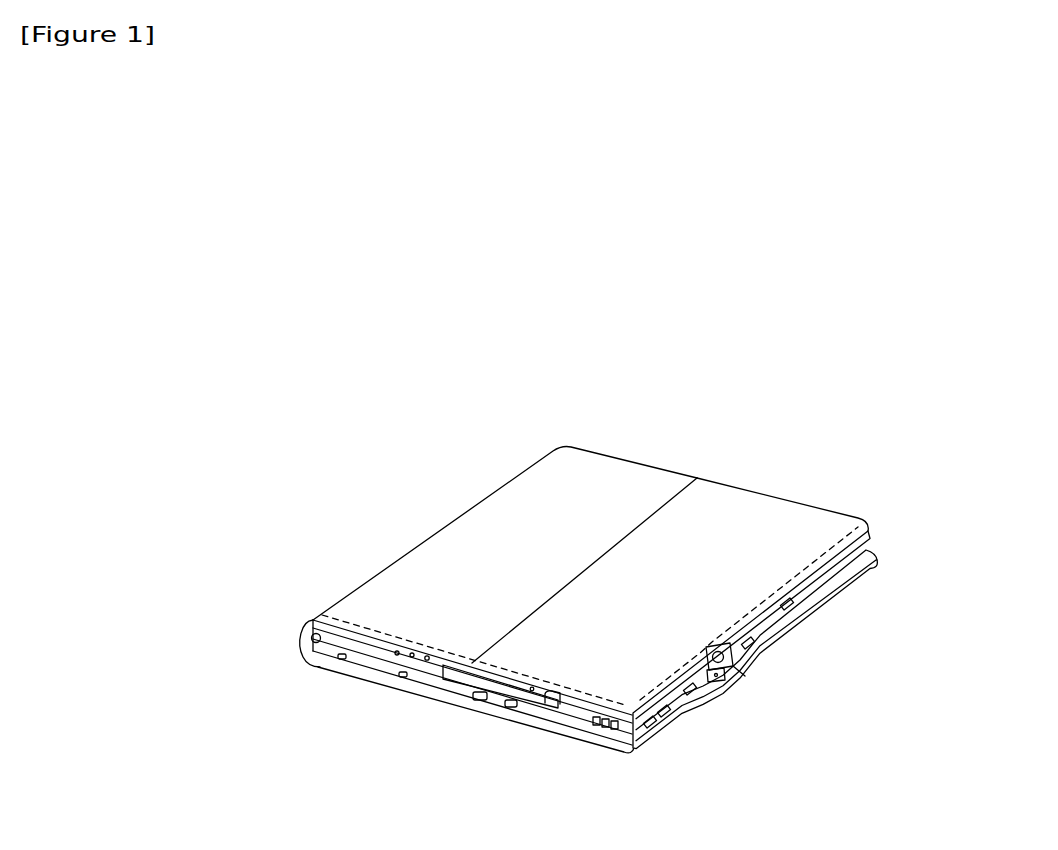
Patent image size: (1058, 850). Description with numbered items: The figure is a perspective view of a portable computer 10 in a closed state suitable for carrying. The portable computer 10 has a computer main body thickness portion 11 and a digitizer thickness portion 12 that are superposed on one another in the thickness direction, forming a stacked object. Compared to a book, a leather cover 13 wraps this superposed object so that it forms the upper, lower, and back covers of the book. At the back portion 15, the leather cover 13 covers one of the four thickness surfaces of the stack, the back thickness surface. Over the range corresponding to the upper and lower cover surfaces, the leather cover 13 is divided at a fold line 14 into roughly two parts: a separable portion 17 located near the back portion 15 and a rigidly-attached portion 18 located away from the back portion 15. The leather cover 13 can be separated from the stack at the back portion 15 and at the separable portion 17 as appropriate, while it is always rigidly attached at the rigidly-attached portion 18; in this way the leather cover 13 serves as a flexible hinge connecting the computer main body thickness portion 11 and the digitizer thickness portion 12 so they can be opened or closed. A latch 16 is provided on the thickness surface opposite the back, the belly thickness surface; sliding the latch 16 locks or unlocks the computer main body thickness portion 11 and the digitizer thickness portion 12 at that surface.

The portable computer 10 is at (591, 374).
The computer main body thickness portion 11 is at (378, 653).
The digitizer thickness portion 12 is at (443, 688).
The leather cover 13 is at (725, 528).
The fold line 14 is at (642, 518).
The back portion 15 is at (300, 633).
The latch 16 is at (730, 678).
The separable portion 17 is at (473, 558).
The rigidly-attached portion 18 is at (765, 562).